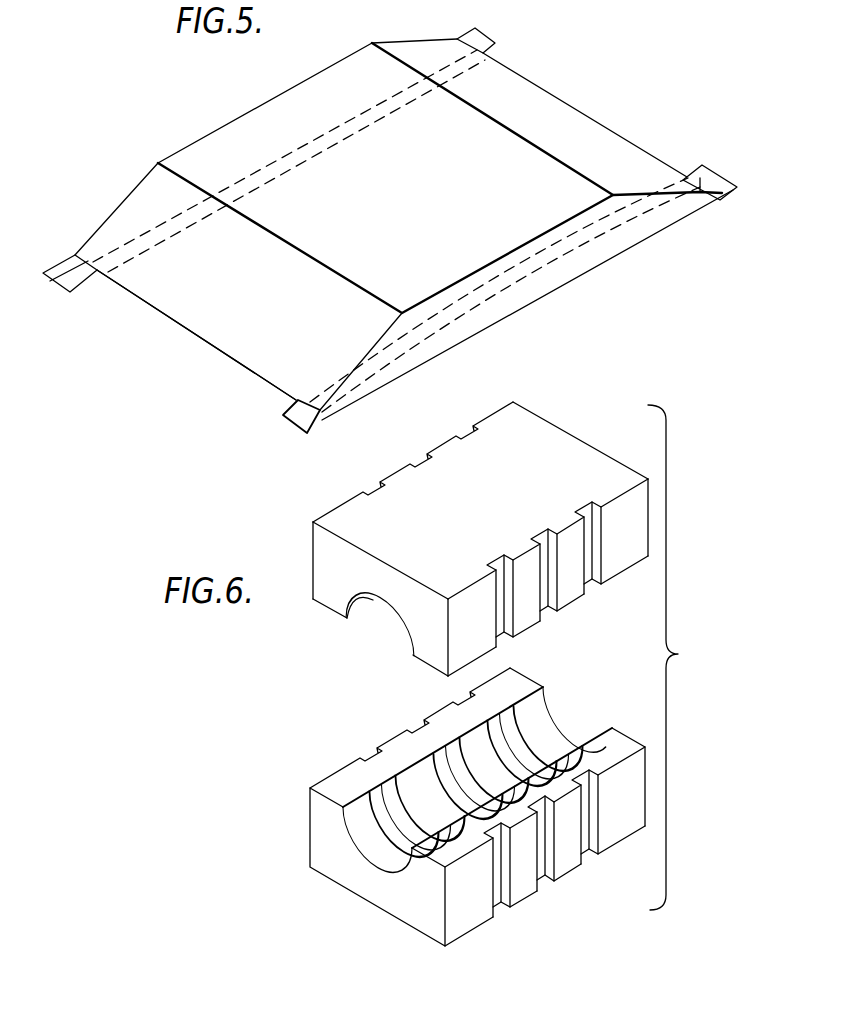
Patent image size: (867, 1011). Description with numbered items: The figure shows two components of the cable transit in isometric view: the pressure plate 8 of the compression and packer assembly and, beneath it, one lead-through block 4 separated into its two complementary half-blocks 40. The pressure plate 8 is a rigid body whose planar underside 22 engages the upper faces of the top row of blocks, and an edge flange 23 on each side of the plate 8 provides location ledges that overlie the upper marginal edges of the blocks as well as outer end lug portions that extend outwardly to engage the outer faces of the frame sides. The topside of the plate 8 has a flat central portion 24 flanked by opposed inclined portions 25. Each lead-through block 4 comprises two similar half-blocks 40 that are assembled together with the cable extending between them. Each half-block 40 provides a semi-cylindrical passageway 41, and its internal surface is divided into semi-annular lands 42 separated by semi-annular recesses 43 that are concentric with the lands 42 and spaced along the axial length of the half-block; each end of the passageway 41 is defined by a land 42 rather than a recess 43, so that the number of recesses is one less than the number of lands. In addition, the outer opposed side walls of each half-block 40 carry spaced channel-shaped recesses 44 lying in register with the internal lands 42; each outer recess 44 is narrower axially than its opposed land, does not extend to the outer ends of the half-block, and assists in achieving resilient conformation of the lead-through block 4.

In FIG. 6, the lead-through block 4 is at (478, 672).
In FIG. 5, the pressure plate 8 is at (390, 223).
In FIG. 5, the planar underside 22 is at (197, 335).
In FIG. 5, the edge flange 23 is at (80, 282).
In FIG. 5, the flat central portion 24 is at (298, 84).
In FIG. 5, the inclined portions 25 is at (403, 41).
In FIG. 6, the half-block 40 is at (452, 672).
In FIG. 6, the semi-cylindrical passageway 41 is at (388, 618).
In FIG. 6, the semi-annular lands 42 is at (557, 737).
In FIG. 6, the semi-annular recesses 43 is at (503, 720).
In FIG. 6, the channel-shaped recesses 44 is at (464, 438).